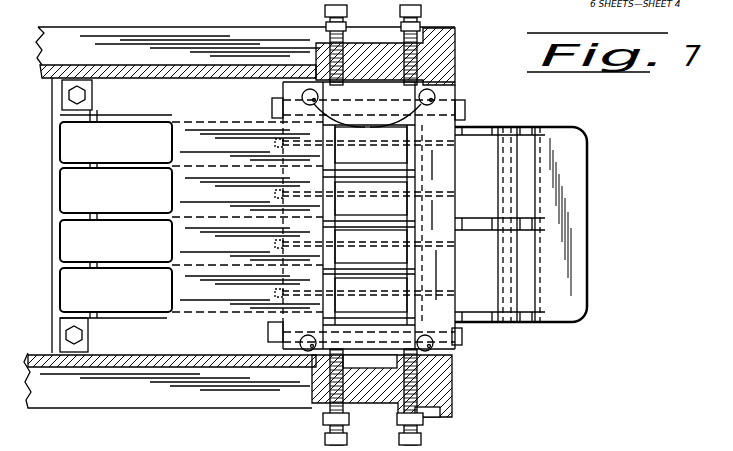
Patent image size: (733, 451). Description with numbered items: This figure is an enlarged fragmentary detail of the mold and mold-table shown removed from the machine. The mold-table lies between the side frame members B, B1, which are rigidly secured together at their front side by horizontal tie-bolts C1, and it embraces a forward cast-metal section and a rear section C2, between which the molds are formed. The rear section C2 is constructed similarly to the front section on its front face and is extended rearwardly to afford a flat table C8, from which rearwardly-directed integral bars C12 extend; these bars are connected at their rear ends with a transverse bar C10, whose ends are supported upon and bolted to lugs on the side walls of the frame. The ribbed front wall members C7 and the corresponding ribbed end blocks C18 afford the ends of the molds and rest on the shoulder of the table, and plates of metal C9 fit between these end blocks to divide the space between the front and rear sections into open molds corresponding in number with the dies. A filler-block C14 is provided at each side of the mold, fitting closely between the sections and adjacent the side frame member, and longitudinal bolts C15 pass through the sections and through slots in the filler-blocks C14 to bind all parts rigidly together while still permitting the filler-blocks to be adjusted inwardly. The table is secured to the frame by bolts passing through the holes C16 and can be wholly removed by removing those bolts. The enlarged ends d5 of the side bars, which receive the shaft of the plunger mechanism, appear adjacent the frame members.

The side frame member B1 is at (458, 84).
The side frame member B is at (452, 386).
The enlarged end of side bar d5 is at (287, 433).
The filler-block C14 is at (384, 100).
The ribbed end block C18 is at (327, 241).
The front wall member C7 is at (413, 246).
The metal plate C9 is at (357, 127).
The flat table C8 is at (197, 275).
The transverse bar C10 is at (52, 322).
The rear section of the mold-table C2 is at (185, 202).
The integral bar C12 is at (72, 212).
The longitudinal bolt C15 is at (270, 335).
The hole in the table C16 is at (466, 112).
The tie-bolt C1 is at (457, 353).